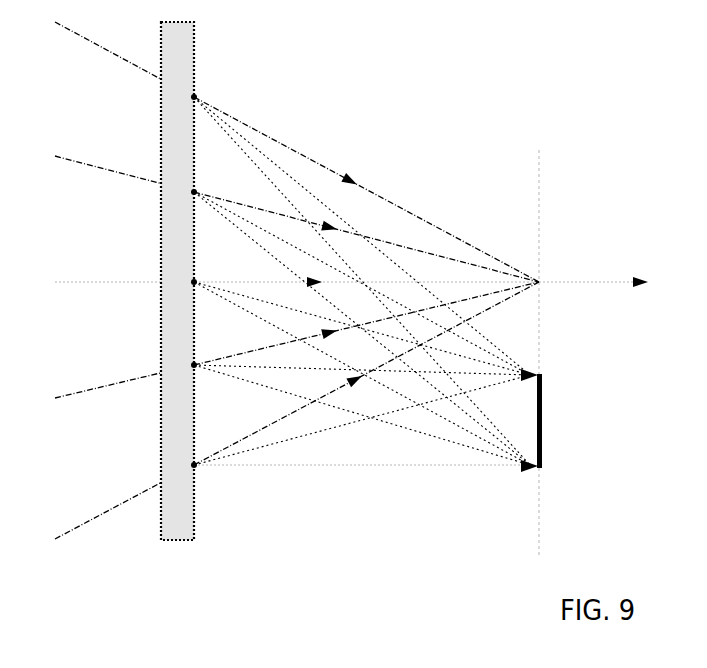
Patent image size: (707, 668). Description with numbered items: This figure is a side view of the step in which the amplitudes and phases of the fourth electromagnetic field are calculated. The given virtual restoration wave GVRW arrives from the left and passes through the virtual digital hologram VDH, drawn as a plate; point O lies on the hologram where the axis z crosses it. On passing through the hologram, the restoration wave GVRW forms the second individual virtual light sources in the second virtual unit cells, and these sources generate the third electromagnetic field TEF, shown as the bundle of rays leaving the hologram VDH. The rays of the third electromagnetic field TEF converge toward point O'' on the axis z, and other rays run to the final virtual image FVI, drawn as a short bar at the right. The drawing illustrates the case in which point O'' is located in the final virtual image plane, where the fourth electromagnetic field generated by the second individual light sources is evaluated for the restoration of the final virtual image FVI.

The given virtual restoration wave GVRW is at (91, 150).
The third electromagnetic field TEF is at (276, 131).
The virtual digital hologram VDH is at (211, 509).
The final virtual image FVI is at (558, 421).
The origin point on optical element O is at (215, 306).
The point O" O'' is at (567, 305).
The optical axis z is at (354, 352).